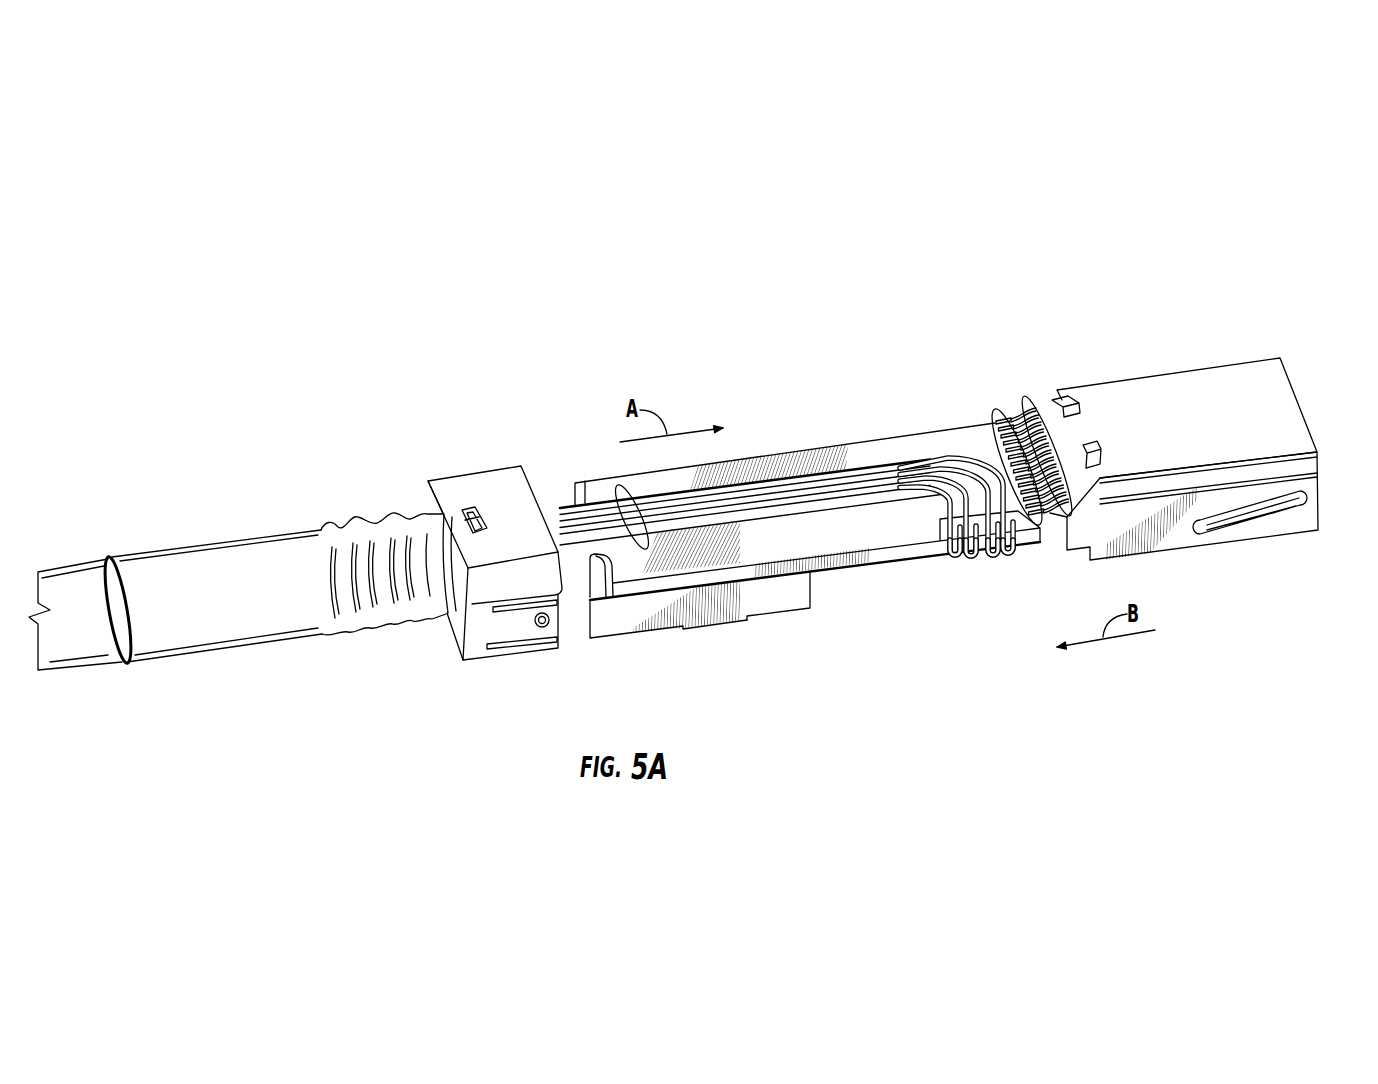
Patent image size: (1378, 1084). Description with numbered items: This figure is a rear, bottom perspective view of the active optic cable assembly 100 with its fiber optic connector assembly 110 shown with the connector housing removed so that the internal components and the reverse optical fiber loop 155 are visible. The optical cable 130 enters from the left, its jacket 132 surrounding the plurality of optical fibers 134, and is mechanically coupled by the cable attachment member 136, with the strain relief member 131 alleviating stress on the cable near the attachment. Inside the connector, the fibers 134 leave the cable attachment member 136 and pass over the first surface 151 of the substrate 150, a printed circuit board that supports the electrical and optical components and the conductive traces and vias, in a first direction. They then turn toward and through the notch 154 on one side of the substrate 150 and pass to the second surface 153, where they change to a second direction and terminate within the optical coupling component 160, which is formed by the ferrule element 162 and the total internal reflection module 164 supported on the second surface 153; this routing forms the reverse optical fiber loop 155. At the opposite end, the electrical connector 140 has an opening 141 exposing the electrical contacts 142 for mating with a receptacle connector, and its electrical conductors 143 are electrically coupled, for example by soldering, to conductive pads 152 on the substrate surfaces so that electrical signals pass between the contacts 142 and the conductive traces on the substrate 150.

The active optic cable assembly 100 is at (693, 300).
The fiber optic connector assembly 110 is at (757, 390).
The optical cable 130 is at (185, 525).
The strain relief member 131 is at (331, 517).
The cable jacket 132 is at (75, 583).
The optical fibers 134 is at (625, 490).
The cable attachment member 136 is at (443, 487).
The electrical connector 140 is at (1217, 363).
The opening 141 is at (1320, 495).
The electrical contacts 142 is at (1290, 520).
The electrical conductors 143 is at (1030, 398).
The substrate 150 is at (900, 445).
The first surface 151 is at (907, 535).
The conductive pads 152 is at (1000, 410).
The second surface 153 is at (933, 560).
The notch 154 is at (907, 517).
The reverse optical fiber loop 155 is at (1030, 567).
The optical coupling component 160 is at (773, 620).
The ferrule element 162 is at (810, 593).
The total internal reflection module 164 is at (612, 628).